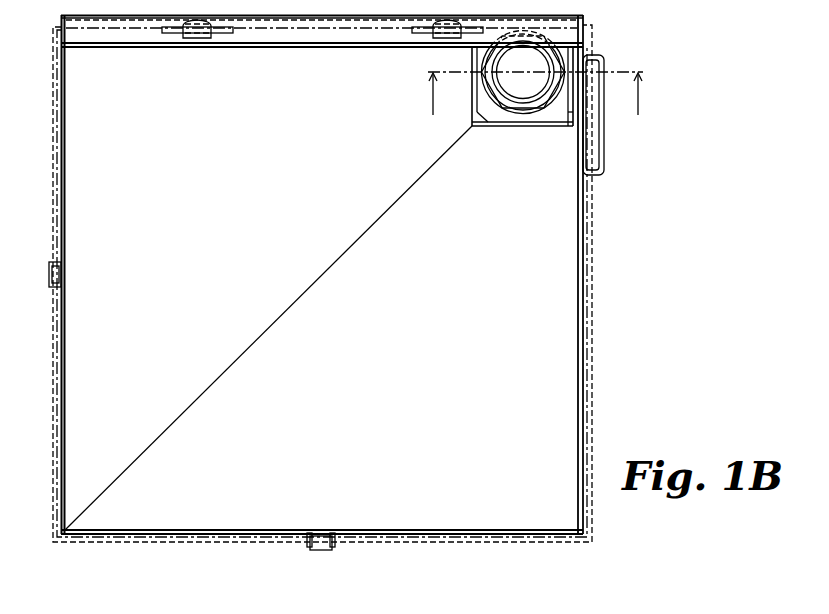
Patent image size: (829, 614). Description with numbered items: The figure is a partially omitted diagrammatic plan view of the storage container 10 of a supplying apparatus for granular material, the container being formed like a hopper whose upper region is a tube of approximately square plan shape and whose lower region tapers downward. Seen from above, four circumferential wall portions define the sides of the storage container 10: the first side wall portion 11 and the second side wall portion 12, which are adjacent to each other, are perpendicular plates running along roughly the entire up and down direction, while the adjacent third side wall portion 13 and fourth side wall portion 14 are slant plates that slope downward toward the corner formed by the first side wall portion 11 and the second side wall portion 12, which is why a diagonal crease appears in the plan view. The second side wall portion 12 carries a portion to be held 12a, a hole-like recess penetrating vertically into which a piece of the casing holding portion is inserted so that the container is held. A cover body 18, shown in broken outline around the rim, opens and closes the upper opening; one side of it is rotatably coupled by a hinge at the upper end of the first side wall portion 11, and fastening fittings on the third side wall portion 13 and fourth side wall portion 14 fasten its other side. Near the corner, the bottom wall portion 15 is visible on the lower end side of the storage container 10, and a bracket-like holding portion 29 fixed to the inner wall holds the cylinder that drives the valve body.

The storage container 10 is at (361, 281).
The first side wall portion 11 is at (255, 50).
The second side wall portion 12 is at (576, 302).
The portion to be held 12a is at (606, 162).
The third side wall portion 13 is at (242, 528).
The fourth side wall portion 14 is at (66, 217).
The bottom wall portion 15 is at (474, 127).
The cover body 18 is at (594, 269).
The holding portion 29 is at (520, 118).